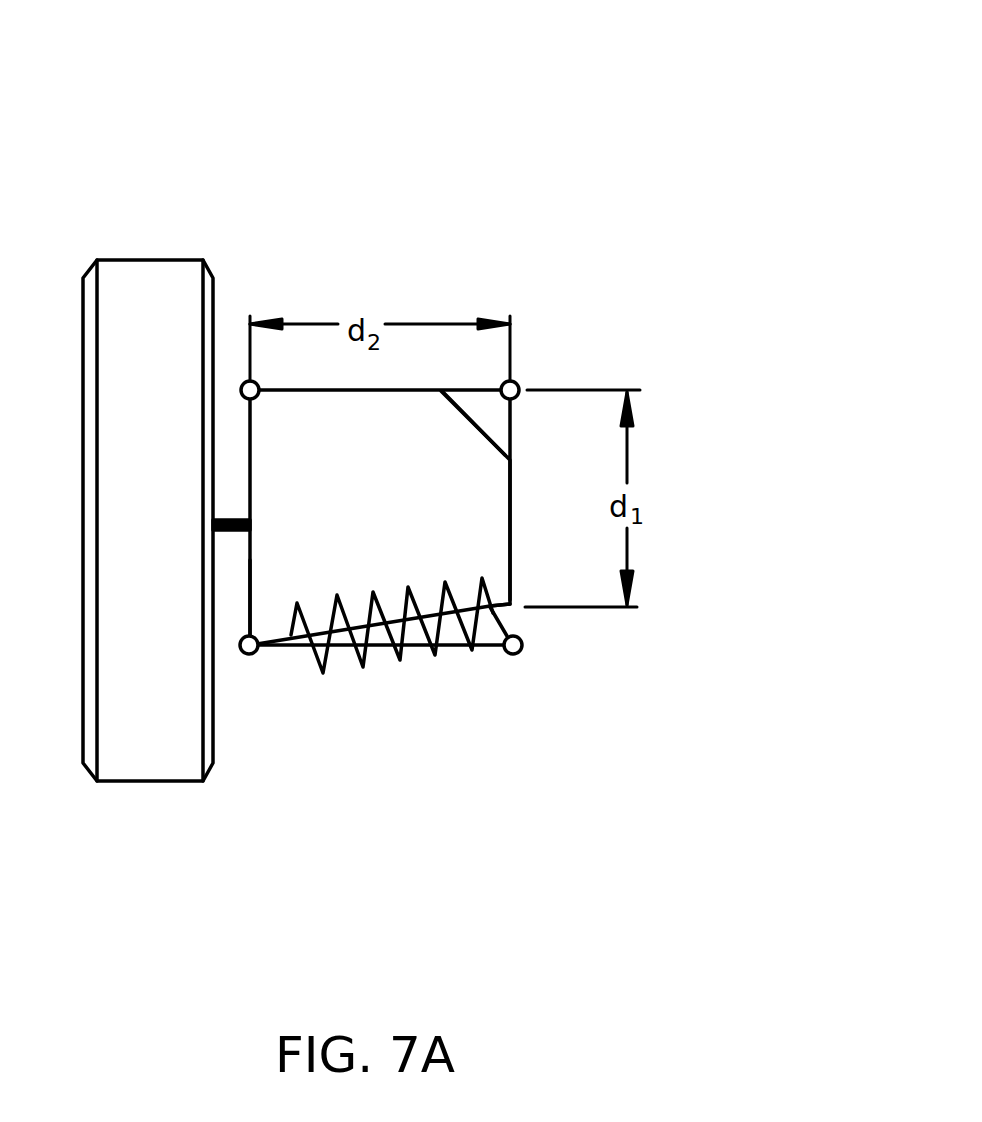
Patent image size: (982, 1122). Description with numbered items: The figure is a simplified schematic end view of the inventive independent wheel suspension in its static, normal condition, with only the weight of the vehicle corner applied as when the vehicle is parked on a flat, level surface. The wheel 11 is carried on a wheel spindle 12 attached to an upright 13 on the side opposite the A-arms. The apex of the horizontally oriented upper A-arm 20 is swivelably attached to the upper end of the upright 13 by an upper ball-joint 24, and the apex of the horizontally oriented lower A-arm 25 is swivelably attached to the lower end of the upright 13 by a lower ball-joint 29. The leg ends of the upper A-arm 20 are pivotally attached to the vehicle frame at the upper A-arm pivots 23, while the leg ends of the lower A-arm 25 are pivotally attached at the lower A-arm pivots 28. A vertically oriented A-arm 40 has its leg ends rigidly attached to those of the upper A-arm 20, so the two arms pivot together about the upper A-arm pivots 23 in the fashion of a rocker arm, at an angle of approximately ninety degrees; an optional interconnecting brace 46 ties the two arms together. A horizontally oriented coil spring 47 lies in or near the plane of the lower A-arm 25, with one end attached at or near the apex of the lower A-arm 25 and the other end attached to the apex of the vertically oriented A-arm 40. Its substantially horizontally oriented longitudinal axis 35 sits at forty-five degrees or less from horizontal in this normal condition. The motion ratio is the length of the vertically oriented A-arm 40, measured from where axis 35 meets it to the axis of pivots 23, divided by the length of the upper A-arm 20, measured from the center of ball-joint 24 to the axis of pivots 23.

The wheel 11 is at (147, 260).
The wheel spindle 12 is at (228, 520).
The upright 13 is at (247, 570).
The horizontally oriented upper A-arm 20 is at (420, 390).
The upper A-arm pivots 23 is at (513, 382).
The upper ball-joint 24 is at (250, 381).
The horizontally oriented lower A-arm 25 is at (447, 648).
The lower A-arm pivots 28 is at (517, 653).
The lower ball-joint 29 is at (253, 653).
The substantially horizontally oriented longitudinal axis 35 is at (490, 607).
The vertically oriented A-arm 40 is at (510, 520).
The interconnecting brace 46 is at (483, 432).
The horizontally oriented coil spring 47 is at (395, 647).